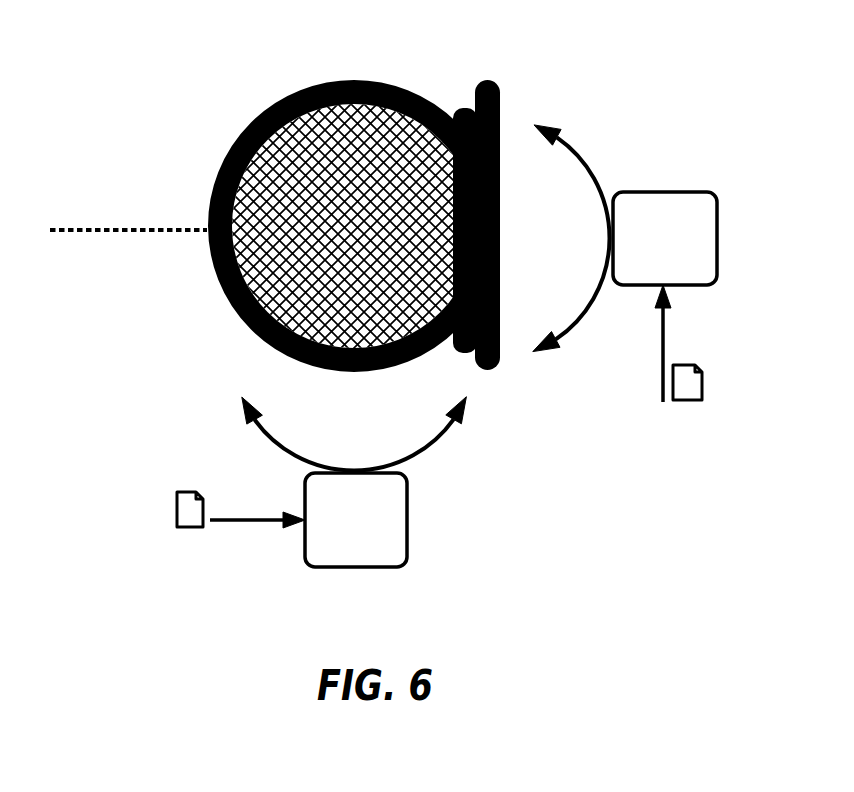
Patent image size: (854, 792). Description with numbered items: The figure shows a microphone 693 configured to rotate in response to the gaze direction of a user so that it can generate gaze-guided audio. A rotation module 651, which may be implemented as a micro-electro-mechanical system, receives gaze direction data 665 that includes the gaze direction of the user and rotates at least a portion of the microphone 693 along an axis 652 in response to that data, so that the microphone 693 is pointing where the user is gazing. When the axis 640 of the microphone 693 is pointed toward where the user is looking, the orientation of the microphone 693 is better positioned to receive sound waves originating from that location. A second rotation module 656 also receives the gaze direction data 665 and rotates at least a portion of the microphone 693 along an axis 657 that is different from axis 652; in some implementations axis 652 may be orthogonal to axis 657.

The microphone 693 is at (373, 80).
The axis 640 is at (70, 229).
The axis 657 is at (597, 168).
The second rotation module 656 is at (665, 297).
The axis 652 is at (443, 445).
The rotation module 651 is at (308, 520).
The gaze direction data 665 is at (702, 381).